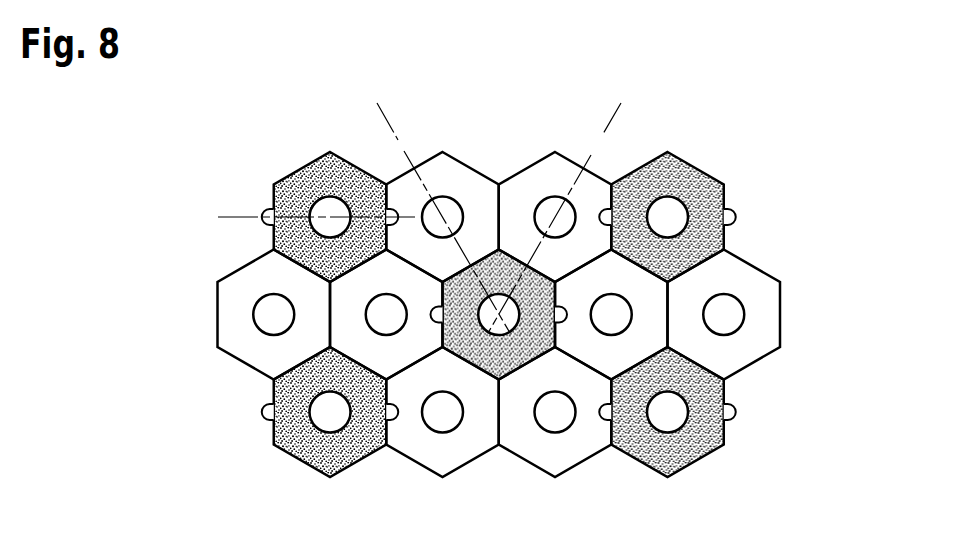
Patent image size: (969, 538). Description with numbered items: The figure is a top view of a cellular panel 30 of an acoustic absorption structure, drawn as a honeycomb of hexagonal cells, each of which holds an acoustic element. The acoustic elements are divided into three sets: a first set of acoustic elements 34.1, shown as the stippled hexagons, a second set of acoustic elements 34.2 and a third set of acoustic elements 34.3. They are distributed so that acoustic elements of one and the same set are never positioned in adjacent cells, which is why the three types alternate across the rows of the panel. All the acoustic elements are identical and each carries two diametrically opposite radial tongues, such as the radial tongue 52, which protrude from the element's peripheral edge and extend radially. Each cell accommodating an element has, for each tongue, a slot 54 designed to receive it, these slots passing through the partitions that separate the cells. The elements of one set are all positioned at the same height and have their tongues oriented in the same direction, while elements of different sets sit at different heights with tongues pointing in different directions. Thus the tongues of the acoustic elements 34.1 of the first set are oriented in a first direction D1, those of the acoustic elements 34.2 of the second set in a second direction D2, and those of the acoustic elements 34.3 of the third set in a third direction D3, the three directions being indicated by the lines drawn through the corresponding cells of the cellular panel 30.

The cellular panel 30 is at (688, 143).
The acoustic elements of the first set 34.1 is at (295, 180).
The acoustic elements of the second set 34.2 is at (452, 182).
The acoustic elements of the third set 34.3 is at (537, 188).
The radial tongue 52 is at (264, 210).
The slot 54 is at (397, 205).
The first direction D1 is at (236, 218).
The second direction D2 is at (399, 151).
The third direction D3 is at (599, 152).